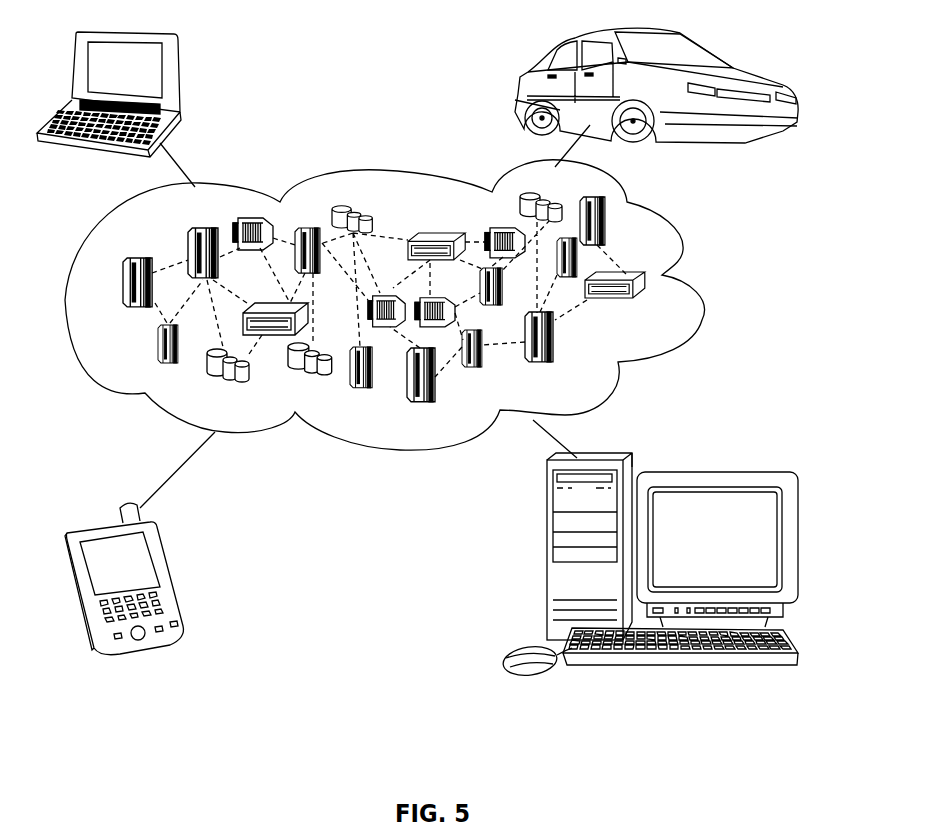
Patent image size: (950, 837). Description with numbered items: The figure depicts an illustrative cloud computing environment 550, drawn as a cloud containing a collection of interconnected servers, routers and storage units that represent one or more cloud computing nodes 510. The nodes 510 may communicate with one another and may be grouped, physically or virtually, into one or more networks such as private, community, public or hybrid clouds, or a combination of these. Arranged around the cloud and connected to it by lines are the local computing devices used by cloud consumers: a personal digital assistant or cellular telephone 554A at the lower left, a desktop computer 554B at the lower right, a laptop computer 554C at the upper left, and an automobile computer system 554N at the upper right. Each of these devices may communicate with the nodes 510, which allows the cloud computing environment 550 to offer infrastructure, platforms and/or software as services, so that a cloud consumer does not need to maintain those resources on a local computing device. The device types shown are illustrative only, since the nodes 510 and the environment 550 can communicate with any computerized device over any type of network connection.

The cloud computing nodes 510 is at (670, 306).
The cloud computing environment 550 is at (683, 250).
The personal digital assistant or cellular telephone 554A is at (168, 573).
The desktop computer 554B is at (547, 557).
The laptop computer 554C is at (178, 77).
The automobile computer system 554N is at (527, 80).